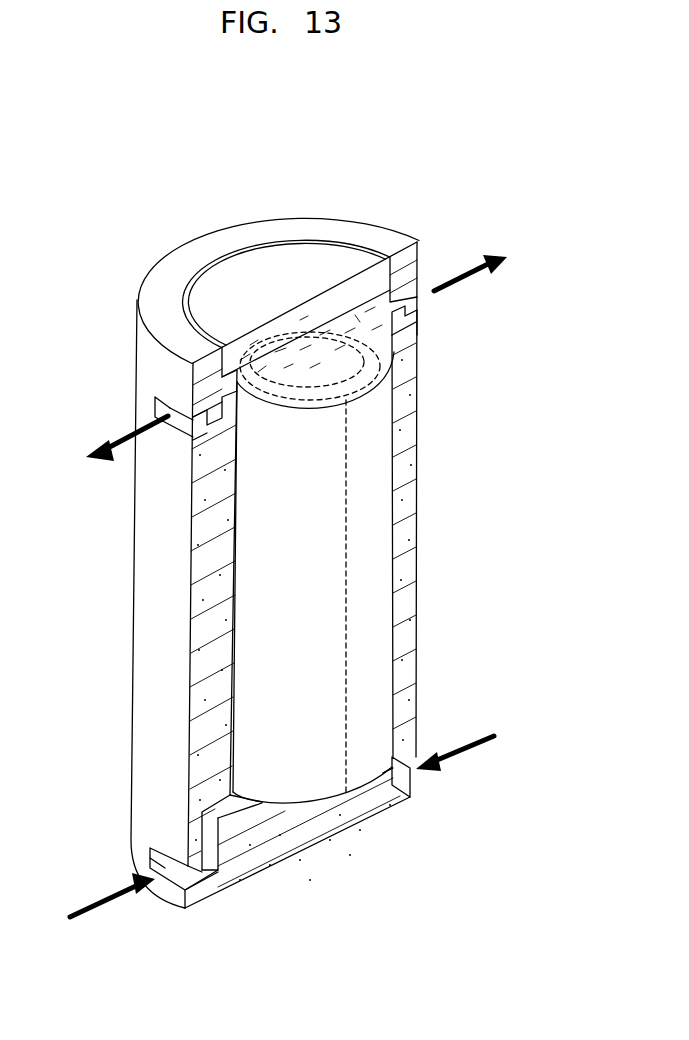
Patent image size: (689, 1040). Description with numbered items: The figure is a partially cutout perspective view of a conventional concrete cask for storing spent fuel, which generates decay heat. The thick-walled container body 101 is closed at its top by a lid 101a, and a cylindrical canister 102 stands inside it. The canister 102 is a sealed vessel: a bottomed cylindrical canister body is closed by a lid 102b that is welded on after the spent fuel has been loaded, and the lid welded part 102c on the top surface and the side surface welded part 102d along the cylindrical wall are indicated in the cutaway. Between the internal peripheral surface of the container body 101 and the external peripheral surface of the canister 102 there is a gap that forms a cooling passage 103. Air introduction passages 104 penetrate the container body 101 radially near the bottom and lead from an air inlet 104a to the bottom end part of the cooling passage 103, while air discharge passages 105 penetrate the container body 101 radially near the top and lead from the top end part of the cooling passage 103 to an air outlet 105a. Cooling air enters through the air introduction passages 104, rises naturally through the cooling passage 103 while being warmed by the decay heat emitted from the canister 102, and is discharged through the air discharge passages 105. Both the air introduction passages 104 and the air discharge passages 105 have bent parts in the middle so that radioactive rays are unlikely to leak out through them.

The container body 101 is at (150, 660).
The lid 101a is at (310, 243).
The canister 102 is at (386, 586).
The lid 102b is at (317, 353).
The lid welded part 102c is at (400, 370).
The side surface welded part 102d is at (346, 497).
The cooling passage 103 is at (232, 751).
The air introduction passage 104 is at (397, 793).
The air inlet 104a is at (177, 877).
The air discharge passage 105 is at (402, 312).
The air outlet 105a is at (153, 410).